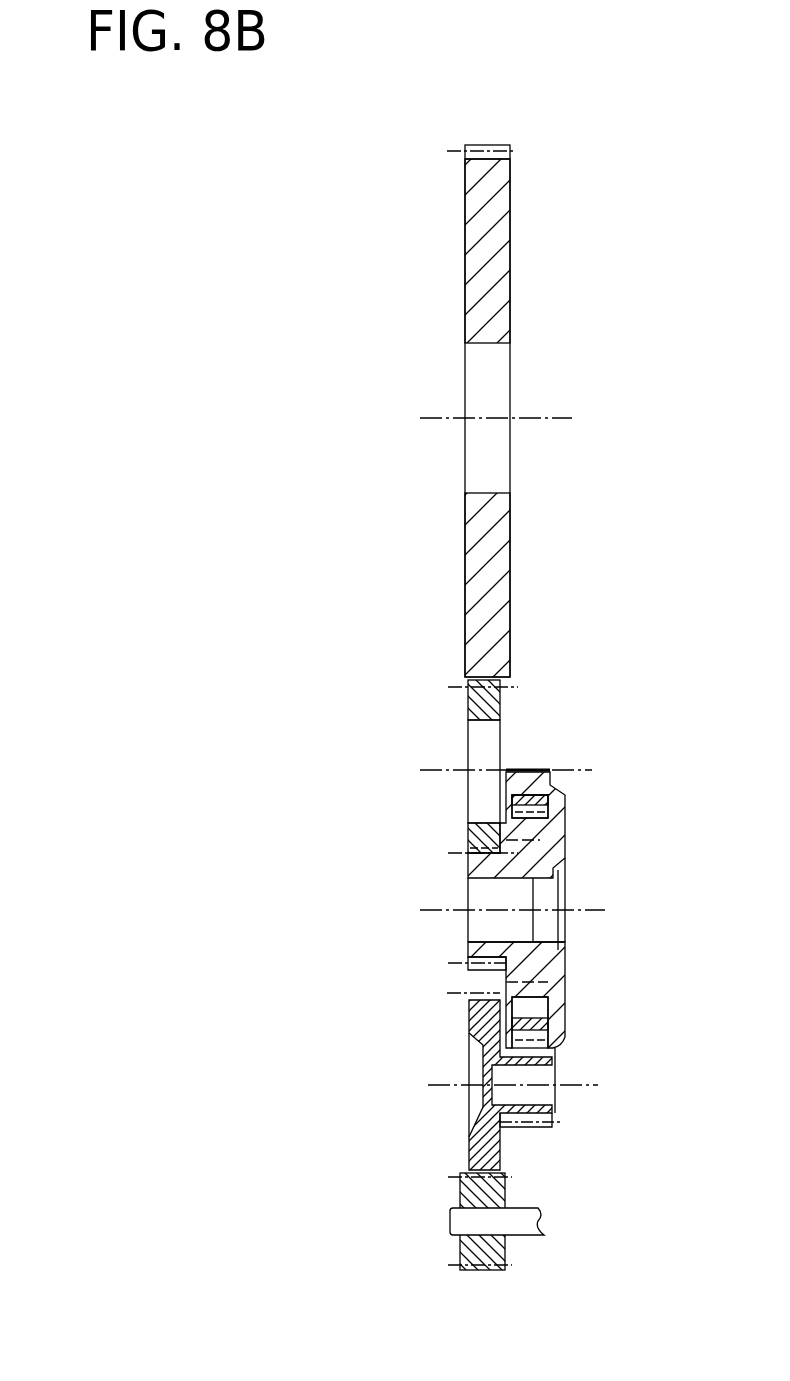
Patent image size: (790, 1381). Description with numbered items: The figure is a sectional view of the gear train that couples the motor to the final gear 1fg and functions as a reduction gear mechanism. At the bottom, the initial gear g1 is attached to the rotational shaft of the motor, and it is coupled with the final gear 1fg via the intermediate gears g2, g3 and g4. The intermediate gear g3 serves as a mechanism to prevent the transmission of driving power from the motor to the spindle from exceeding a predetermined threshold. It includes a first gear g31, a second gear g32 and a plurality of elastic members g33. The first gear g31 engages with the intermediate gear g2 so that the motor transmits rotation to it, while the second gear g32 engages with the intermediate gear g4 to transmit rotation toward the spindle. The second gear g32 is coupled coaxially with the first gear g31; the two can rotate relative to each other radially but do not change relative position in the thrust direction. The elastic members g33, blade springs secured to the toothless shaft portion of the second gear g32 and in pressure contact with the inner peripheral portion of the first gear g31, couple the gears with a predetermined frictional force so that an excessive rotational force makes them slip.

The final gear 1fg is at (508, 296).
The intermediate gear g4 is at (450, 704).
The intermediate gear g3 is at (450, 957).
The elastic member g33 is at (548, 809).
The second gear g32 is at (468, 858).
The first gear g31 is at (565, 1016).
The intermediate gear g2 is at (468, 1157).
The initial gear g1 is at (483, 1272).